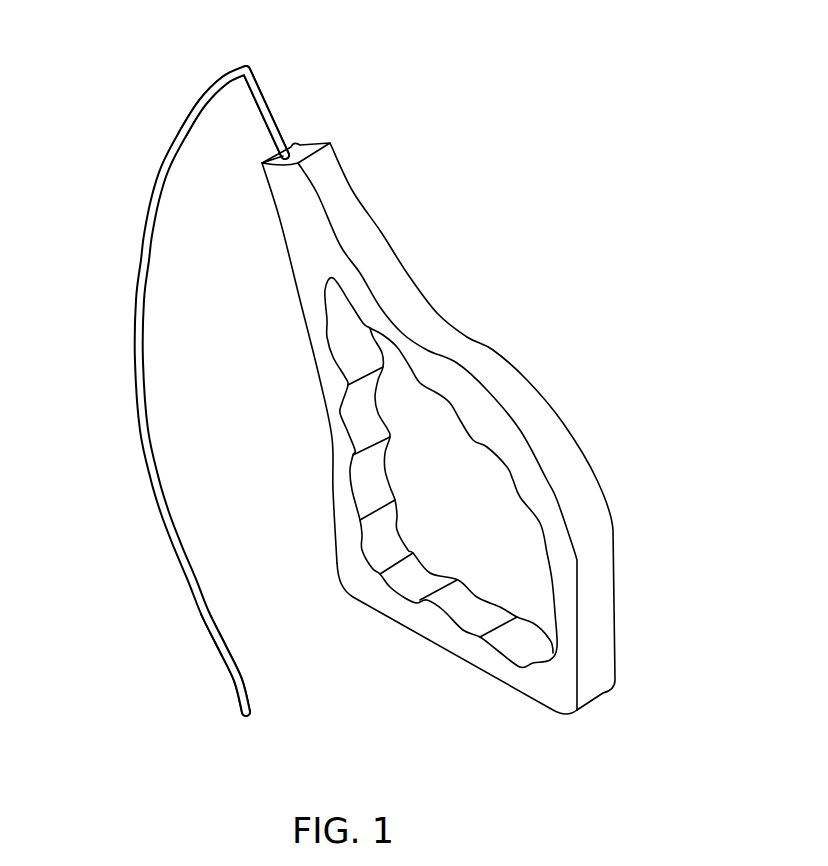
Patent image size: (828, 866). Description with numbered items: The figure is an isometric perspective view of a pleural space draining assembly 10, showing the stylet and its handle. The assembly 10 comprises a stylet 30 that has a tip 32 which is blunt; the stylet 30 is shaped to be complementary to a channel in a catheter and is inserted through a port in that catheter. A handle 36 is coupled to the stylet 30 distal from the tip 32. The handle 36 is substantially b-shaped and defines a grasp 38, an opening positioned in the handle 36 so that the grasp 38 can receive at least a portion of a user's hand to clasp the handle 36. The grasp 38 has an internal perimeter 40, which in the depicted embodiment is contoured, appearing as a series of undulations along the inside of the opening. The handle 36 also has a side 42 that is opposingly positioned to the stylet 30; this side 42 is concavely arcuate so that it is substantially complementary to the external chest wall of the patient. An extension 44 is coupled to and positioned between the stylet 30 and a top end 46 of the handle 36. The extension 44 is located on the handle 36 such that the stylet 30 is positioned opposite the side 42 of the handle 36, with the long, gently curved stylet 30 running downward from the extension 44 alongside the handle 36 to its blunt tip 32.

The draining assembly 10 is at (566, 146).
The stylet 30 is at (137, 365).
The tip 32 is at (248, 725).
The handle 36 is at (487, 355).
The grasp 38 is at (477, 498).
The internal perimeter 40 is at (547, 525).
The side 42 is at (322, 382).
The extension 44 is at (268, 103).
The top end 46 is at (305, 147).